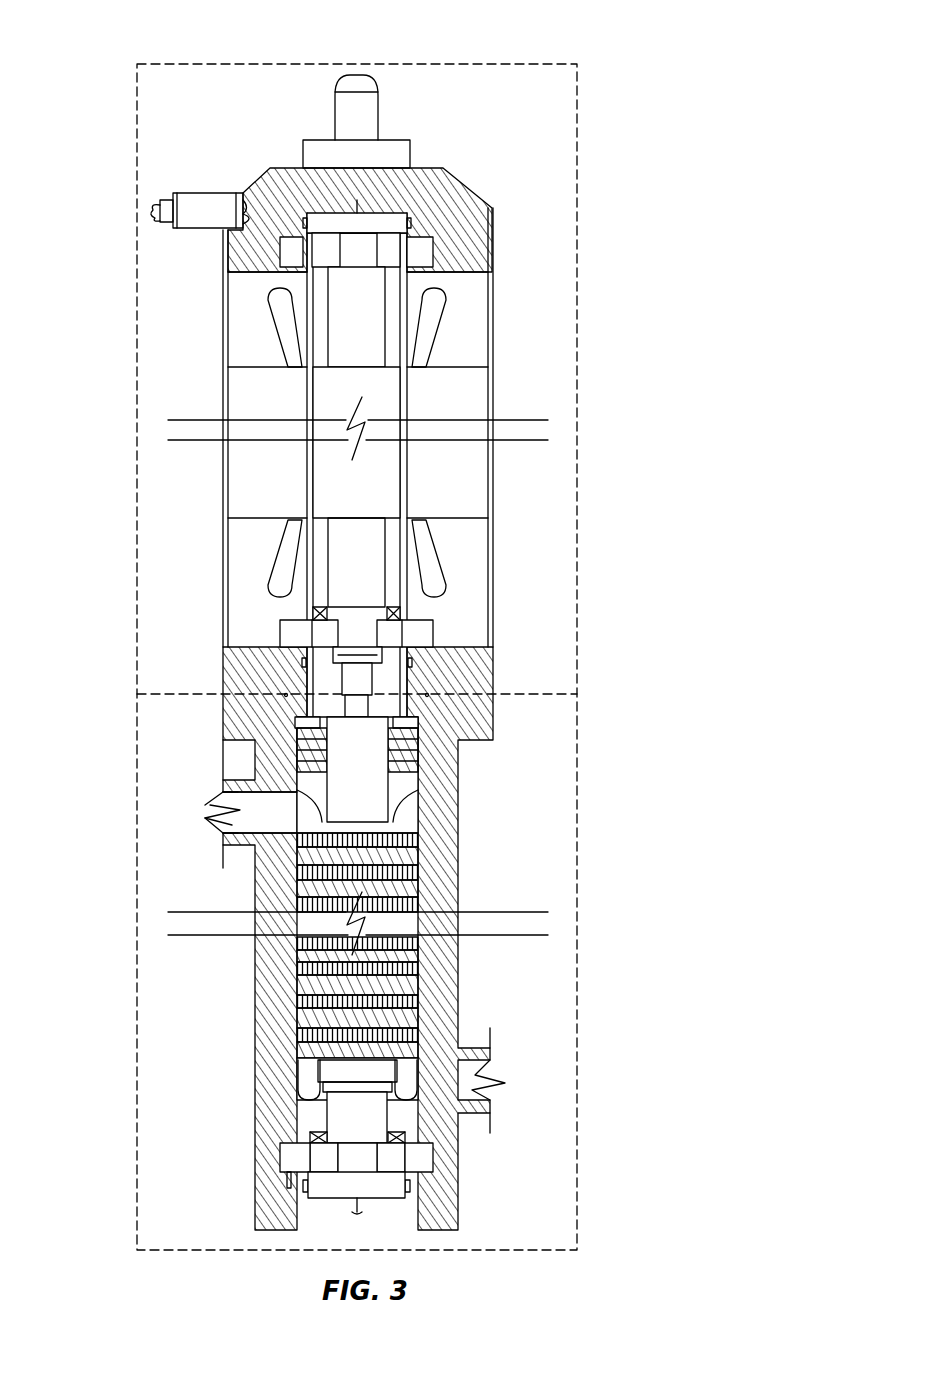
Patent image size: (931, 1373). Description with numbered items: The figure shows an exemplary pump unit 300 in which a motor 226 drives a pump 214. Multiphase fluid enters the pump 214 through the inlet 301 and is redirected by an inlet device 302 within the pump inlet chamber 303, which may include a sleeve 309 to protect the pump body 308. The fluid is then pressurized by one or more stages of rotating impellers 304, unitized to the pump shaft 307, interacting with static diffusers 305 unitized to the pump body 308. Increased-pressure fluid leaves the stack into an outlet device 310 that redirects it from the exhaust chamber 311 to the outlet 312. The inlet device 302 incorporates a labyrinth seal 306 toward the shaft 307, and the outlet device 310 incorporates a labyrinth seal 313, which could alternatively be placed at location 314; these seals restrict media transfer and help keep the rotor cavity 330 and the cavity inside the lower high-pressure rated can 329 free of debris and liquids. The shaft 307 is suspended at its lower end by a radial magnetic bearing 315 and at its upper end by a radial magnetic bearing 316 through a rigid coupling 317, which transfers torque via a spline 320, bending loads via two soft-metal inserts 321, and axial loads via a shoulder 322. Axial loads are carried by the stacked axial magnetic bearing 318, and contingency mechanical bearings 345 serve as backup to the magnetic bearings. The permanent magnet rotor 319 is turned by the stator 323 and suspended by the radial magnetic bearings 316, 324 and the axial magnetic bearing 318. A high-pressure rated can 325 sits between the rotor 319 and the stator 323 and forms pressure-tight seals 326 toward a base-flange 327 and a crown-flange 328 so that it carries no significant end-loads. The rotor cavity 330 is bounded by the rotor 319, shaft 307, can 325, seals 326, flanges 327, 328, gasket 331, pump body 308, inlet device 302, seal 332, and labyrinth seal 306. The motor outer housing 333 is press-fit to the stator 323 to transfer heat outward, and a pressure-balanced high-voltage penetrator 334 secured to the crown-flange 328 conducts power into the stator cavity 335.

The pump unit 300 is at (110, 50).
The motor 226 is at (137, 652).
The pump 214 is at (137, 727).
The inlet 301 is at (230, 808).
The inlet device 302 is at (402, 790).
The pump inlet chamber 303 is at (392, 815).
The impellers 304 is at (300, 998).
The diffusers 305 is at (300, 1022).
The labyrinth seal 306 is at (408, 828).
The pump shaft 307 is at (376, 782).
The pump body 308 is at (458, 985).
The sleeve 309 is at (412, 804).
The outlet device 310 is at (298, 1110).
The exhaust chamber 311 is at (306, 1075).
The outlet 312 is at (480, 1086).
The labyrinth seal 313 is at (320, 1134).
The location 314 is at (300, 1138).
The radial magnetic bearing 315 is at (292, 1165).
The radial magnetic bearing 316 is at (295, 628).
The rigid coupling 317 is at (366, 658).
The axial magnetic bearing 318 is at (426, 696).
The rotor 319 is at (348, 545).
The spline 320 is at (414, 664).
The soft-metal inserts 321 is at (333, 655).
The shoulder 322 is at (398, 640).
The stator 323 is at (470, 396).
The radial magnetic bearing 324 is at (412, 226).
The high-pressure rated can 325 is at (420, 253).
The pressure-tight seals 326 is at (448, 212).
The base-flange 327 is at (240, 658).
The crown-flange 328 is at (447, 187).
The high-pressure rated can 329 is at (410, 1158).
The rotor cavity 330 is at (406, 281).
The gasket 331 is at (287, 697).
The seal 332 is at (293, 779).
The motor outer housing 333 is at (396, 310).
The pressure-balanced high-voltage penetrator 334 is at (243, 193).
The stator cavity 335 is at (470, 356).
The contingency mechanical bearings 345 is at (330, 235).